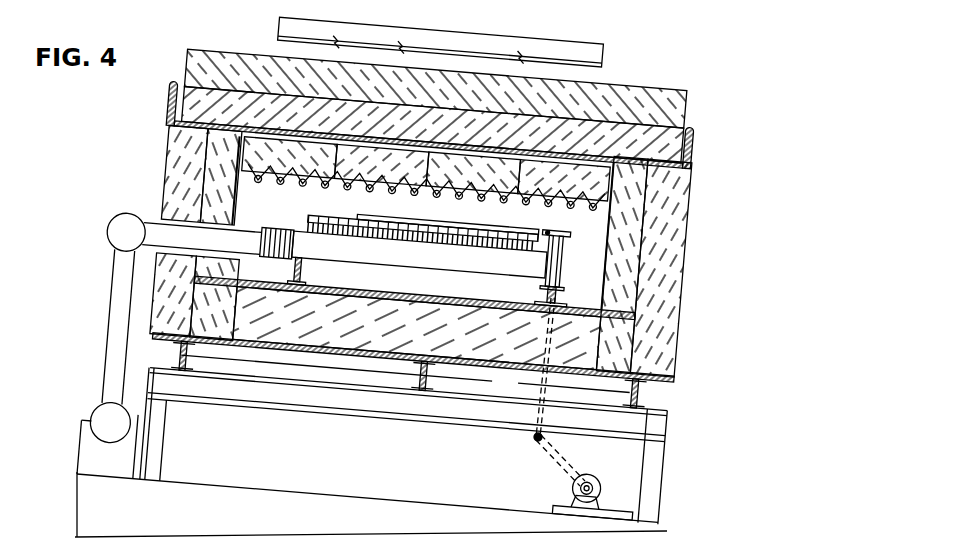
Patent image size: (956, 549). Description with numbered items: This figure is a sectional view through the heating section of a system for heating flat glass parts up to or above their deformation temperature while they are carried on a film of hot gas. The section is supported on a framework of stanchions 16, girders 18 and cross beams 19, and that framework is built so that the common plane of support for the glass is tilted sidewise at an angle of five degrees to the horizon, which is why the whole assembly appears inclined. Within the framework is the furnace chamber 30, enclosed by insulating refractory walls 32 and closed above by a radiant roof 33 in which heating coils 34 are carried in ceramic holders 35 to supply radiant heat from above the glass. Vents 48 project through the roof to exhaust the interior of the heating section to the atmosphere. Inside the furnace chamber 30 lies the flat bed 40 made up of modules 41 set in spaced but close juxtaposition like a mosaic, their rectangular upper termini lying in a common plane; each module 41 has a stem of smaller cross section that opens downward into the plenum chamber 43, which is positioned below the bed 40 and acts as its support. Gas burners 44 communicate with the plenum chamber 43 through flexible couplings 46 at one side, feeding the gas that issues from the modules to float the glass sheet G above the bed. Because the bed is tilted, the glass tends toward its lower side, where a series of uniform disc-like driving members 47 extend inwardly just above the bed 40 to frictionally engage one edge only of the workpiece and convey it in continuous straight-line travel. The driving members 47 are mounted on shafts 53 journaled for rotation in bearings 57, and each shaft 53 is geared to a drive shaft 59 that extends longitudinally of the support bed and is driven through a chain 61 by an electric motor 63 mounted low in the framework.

The stanchions 16 is at (165, 449).
The girders 18 is at (607, 387).
The cross beams 19 is at (318, 403).
The furnace chamber 30 is at (421, 220).
The insulating refractory walls 32 is at (683, 242).
The radiant roof 33 is at (285, 188).
The heating coils 34 is at (301, 186).
The ceramic holders 35 is at (527, 202).
The flat bed 40 is at (308, 216).
The modules 41 is at (354, 217).
The plenum chamber 43 is at (419, 254).
The gas burners 44 is at (111, 230).
The flexible couplings 46 is at (263, 214).
The driving members 47 is at (567, 231).
The vents 48 is at (277, 49).
The shafts 53 is at (557, 290).
The bearings 57 is at (543, 273).
The drive shaft 59 is at (533, 439).
The chain 61 is at (548, 464).
The electric motor 63 is at (600, 483).
The garment G is at (404, 206).